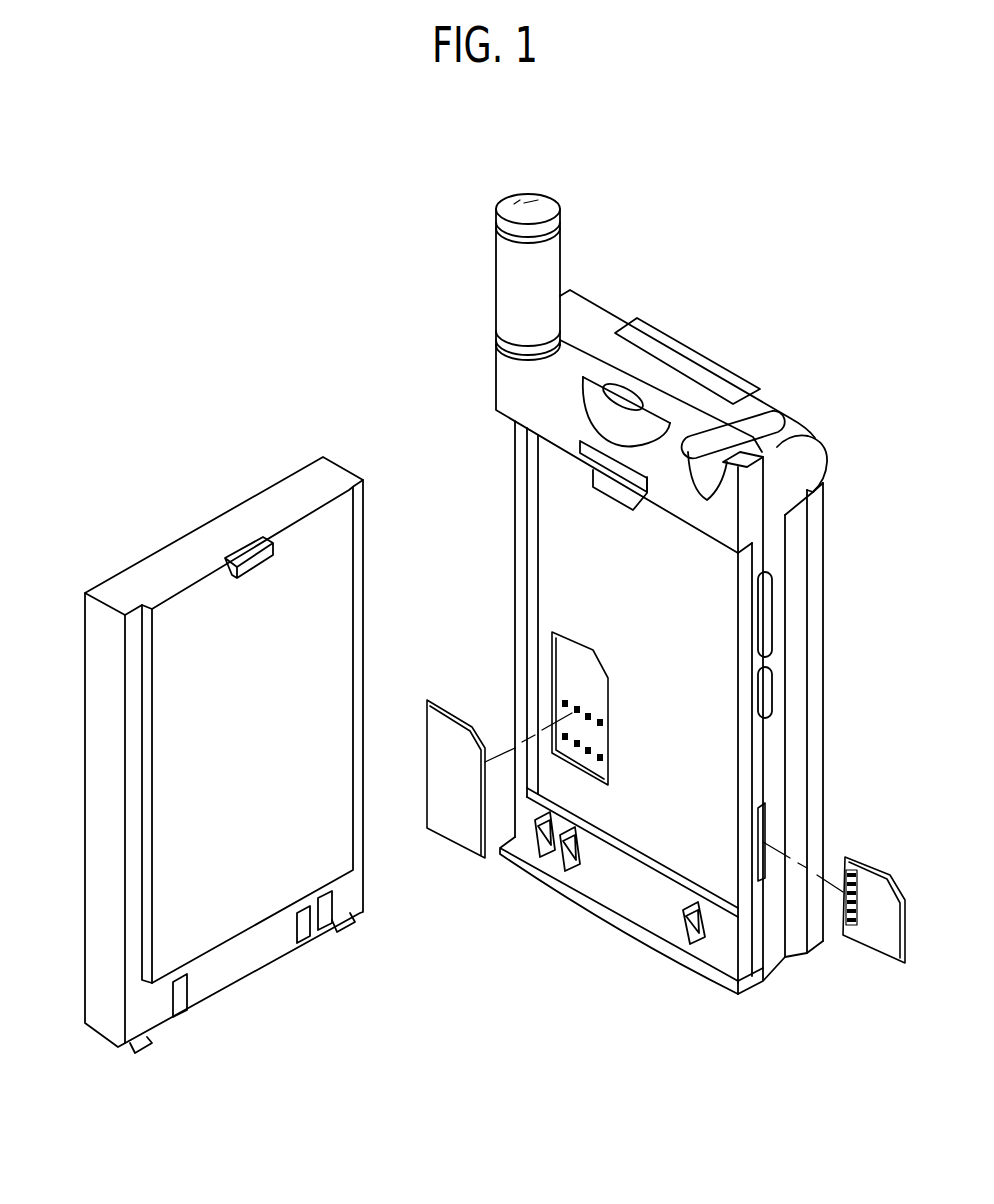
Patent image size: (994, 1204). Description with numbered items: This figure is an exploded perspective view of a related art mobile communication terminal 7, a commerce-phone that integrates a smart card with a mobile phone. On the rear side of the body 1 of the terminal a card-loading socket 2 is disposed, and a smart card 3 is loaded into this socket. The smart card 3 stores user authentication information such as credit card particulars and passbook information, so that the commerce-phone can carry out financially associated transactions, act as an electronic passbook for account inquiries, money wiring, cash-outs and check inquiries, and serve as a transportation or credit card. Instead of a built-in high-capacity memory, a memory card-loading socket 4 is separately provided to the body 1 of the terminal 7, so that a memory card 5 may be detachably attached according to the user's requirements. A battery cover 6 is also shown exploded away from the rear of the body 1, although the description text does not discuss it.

The body 1 is at (827, 630).
The card-loading socket 2 is at (545, 692).
The smart card 3 is at (460, 833).
The memory card-loading socket 4 is at (763, 820).
The memory card 5 is at (873, 877).
The battery cover 6 is at (83, 783).
The mobile communication terminal 7 is at (722, 303).